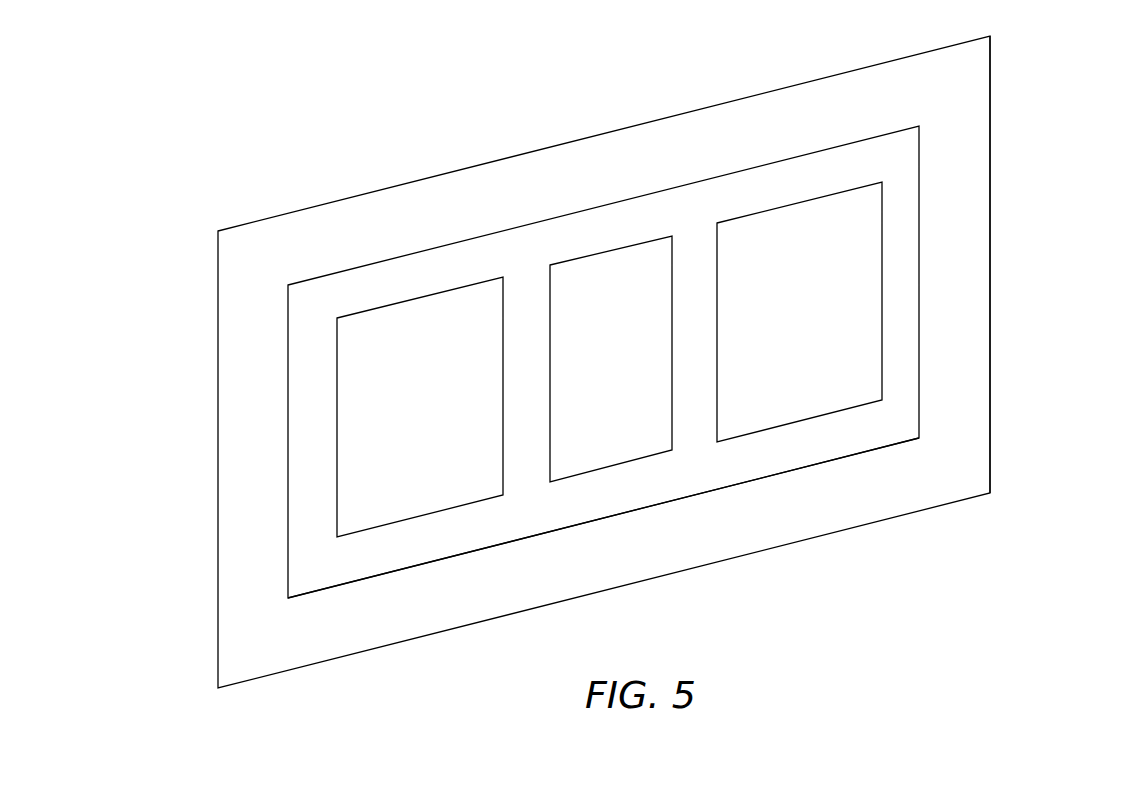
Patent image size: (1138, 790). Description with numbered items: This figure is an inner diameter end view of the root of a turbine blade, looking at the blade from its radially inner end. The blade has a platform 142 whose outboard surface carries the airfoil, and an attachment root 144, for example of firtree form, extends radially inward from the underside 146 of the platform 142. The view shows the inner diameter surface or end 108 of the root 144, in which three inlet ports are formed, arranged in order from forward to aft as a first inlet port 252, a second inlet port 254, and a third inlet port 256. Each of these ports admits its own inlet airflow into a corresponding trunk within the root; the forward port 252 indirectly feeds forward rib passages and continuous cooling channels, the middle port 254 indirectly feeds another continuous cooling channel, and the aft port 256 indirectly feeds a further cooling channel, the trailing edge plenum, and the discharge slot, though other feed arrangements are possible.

The inner diameter surface/end 108 is at (697, 467).
The platform 142 is at (1019, 442).
The attachment root 144 is at (948, 352).
The underside of the platform 146 is at (960, 253).
The inlet port 252 is at (425, 328).
The inlet port 254 is at (600, 282).
The inlet port 256 is at (795, 224).